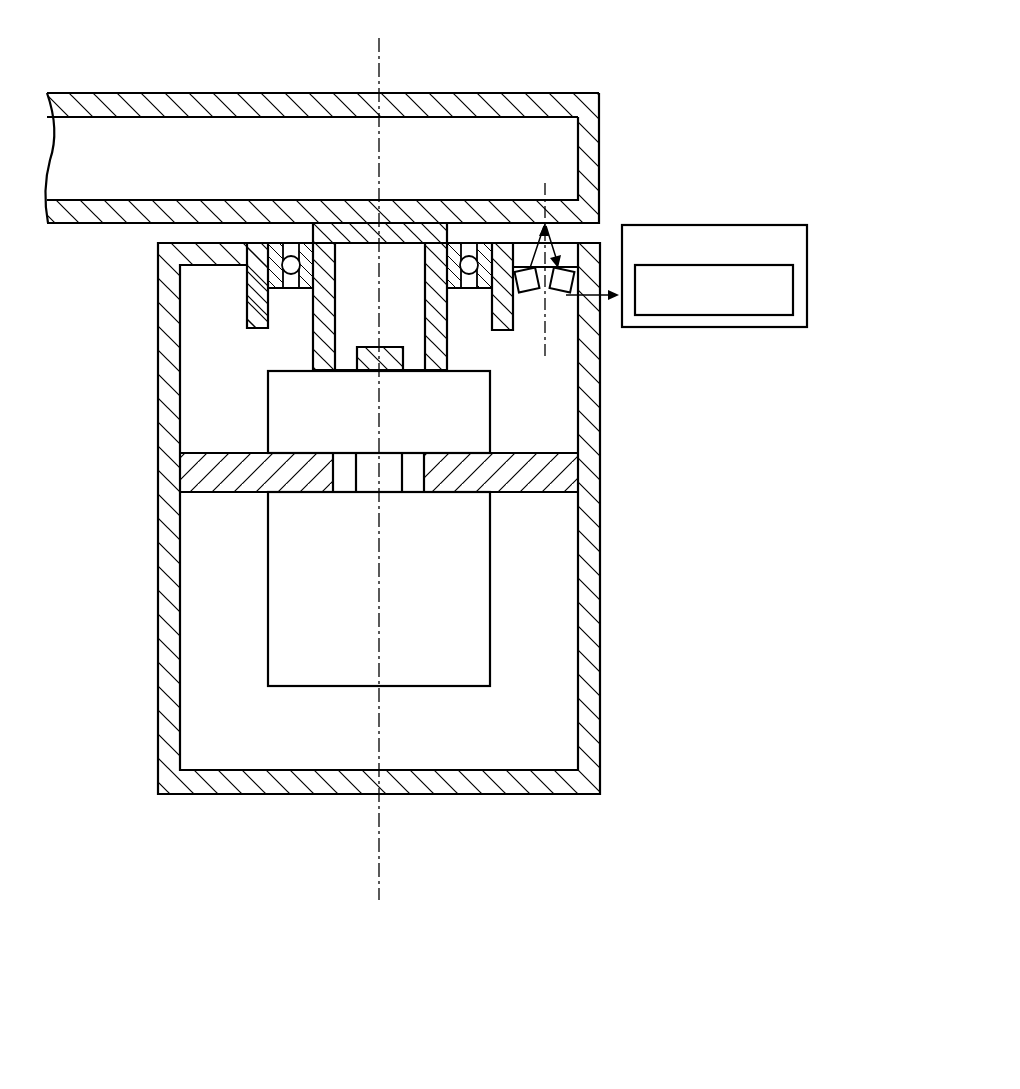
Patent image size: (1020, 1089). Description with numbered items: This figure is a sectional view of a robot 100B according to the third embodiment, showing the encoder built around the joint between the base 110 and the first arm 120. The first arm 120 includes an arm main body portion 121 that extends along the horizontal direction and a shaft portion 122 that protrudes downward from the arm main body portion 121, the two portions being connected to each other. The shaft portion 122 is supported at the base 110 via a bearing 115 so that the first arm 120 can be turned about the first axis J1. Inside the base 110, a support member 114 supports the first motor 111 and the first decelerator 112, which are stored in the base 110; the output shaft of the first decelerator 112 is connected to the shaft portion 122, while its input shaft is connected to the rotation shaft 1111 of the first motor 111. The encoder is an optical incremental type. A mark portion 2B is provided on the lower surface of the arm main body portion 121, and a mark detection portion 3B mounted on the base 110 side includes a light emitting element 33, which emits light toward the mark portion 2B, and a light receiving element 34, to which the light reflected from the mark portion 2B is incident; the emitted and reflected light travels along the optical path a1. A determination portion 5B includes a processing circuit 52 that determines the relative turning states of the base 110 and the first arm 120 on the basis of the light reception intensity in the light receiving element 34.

The robot 100B is at (451, 526).
The first arm 120 is at (322, 120).
The arm main body portion 121 is at (227, 92).
The first axis J1 is at (384, 62).
The base 110 is at (412, 518).
The bearing 115 is at (270, 297).
The support member 114 is at (212, 473).
The shaft portion 122 is at (313, 350).
The first decelerator 112 is at (268, 410).
The first motor 111 is at (490, 607).
The rotation shaft 1111 is at (380, 482).
The mark detection portion 3B is at (627, 317).
The light emitting element 33 is at (527, 292).
The light receiving element 34 is at (567, 290).
The optical axis a1 is at (556, 283).
The determination portion 5B is at (739, 245).
The processing circuit 52 is at (793, 293).
The mark portion 2B is at (584, 230).